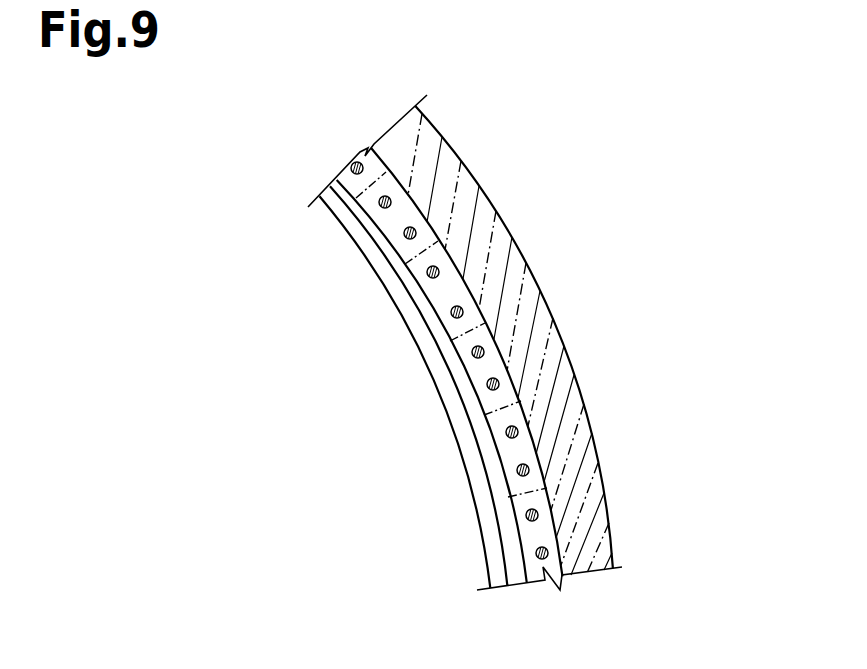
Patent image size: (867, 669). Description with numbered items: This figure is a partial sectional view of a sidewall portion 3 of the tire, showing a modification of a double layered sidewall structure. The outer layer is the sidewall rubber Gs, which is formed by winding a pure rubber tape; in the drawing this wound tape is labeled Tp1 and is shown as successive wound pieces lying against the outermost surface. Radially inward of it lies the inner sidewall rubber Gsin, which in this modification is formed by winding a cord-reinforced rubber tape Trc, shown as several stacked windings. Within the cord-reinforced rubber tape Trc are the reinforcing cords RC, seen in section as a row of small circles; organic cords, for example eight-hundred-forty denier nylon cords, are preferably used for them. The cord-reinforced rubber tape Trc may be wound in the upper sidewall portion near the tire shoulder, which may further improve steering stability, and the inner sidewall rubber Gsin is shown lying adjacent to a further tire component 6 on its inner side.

The sidewall portion 3 is at (421, 368).
The belt layer 6 is at (356, 385).
The sidewall rubber Gs is at (559, 341).
The tread piece Tp1 is at (485, 200).
The inner sidewall rubber Gsin is at (303, 384).
The cord-reinforced rubber tape Trc is at (397, 230).
The reinforcing cord RC is at (518, 472).